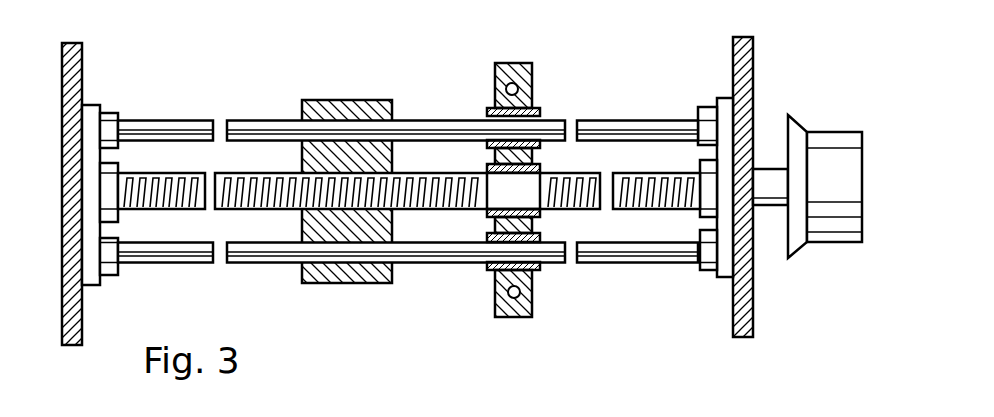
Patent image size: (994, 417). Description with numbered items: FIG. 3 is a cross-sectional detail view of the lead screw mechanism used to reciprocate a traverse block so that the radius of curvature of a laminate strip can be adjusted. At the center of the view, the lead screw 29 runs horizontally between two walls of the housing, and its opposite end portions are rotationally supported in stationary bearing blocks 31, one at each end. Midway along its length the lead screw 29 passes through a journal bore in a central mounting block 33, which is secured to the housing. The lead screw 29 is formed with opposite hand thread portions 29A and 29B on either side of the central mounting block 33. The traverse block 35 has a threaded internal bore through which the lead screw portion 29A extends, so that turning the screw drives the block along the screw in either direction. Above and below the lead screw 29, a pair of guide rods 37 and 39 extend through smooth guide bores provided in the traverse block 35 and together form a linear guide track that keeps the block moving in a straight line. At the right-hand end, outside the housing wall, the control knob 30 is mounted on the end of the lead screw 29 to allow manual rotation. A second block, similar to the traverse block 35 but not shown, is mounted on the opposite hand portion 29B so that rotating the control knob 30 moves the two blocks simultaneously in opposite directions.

The lead screw 29 is at (160, 173).
The lead screw thread portion 29A is at (412, 210).
The opposite hand thread portion 29B is at (680, 193).
The control knob 30 is at (836, 233).
The stationary bearing block 31 is at (102, 285).
The central mounting block 33 is at (520, 63).
The traverse block 35 is at (380, 100).
The guide rod 37 is at (262, 120).
The guide rod 39 is at (615, 262).